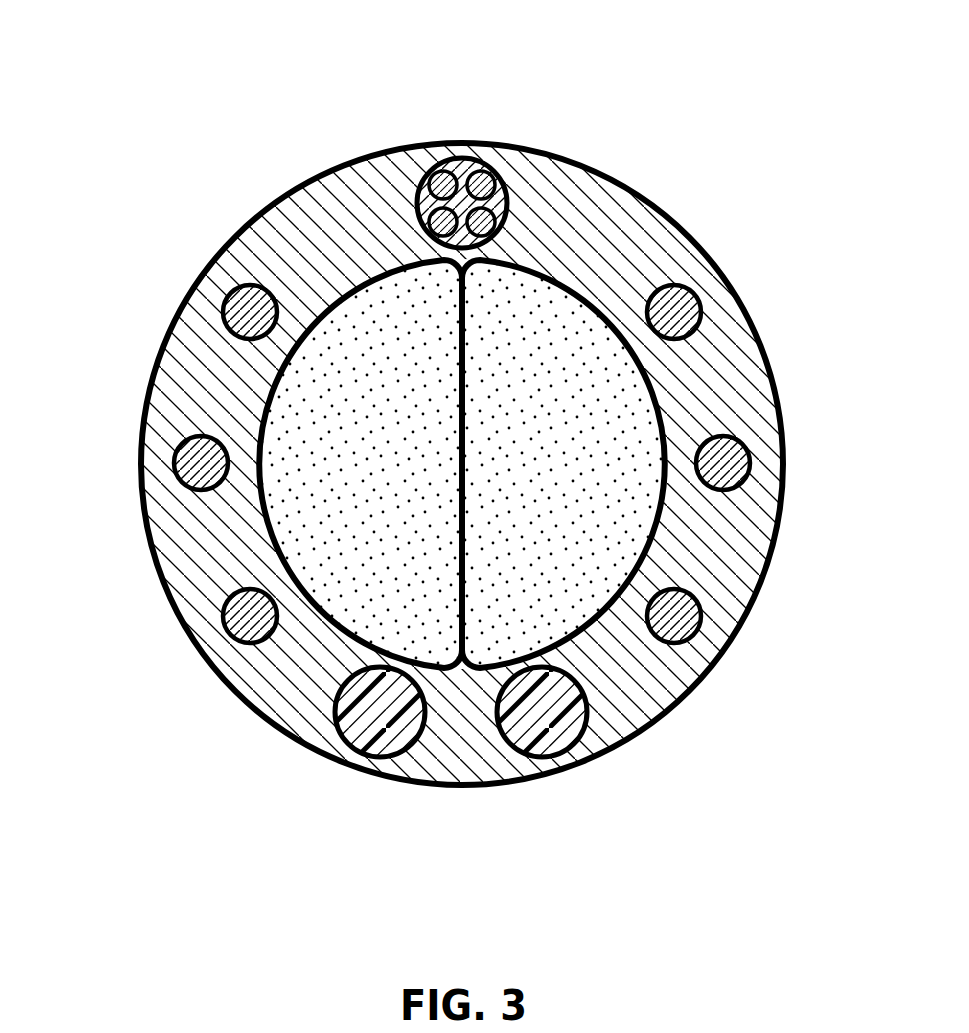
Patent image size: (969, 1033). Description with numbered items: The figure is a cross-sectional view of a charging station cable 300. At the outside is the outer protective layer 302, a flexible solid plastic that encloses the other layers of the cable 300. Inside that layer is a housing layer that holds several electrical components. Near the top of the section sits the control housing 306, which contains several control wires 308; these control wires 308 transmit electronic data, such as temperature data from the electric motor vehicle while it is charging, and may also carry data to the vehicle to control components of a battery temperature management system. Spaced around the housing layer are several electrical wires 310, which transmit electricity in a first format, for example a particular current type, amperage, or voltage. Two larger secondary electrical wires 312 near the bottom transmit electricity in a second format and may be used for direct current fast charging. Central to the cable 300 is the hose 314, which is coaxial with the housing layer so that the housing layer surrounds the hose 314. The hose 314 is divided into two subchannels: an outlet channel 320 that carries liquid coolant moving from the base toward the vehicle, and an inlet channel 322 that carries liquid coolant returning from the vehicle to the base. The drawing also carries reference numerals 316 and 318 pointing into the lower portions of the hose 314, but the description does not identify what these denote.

The cable 300 is at (300, 95).
The outer protective layer 302 is at (262, 212).
The control housing 306 is at (463, 170).
The control wires 308 is at (488, 186).
The electrical wires 310 is at (247, 305).
The secondary electrical wires 312 is at (356, 735).
The hose 314 is at (430, 625).
The right fiber section 316 is at (565, 590).
The left fiber section 318 is at (355, 592).
The outlet channel 320 is at (400, 472).
The inlet channel 322 is at (573, 472).